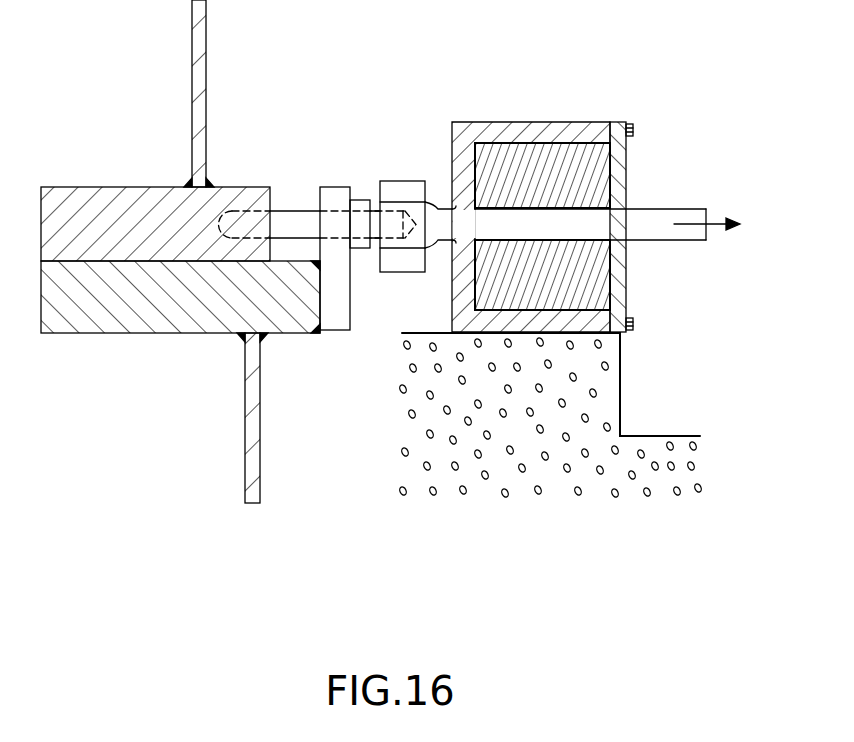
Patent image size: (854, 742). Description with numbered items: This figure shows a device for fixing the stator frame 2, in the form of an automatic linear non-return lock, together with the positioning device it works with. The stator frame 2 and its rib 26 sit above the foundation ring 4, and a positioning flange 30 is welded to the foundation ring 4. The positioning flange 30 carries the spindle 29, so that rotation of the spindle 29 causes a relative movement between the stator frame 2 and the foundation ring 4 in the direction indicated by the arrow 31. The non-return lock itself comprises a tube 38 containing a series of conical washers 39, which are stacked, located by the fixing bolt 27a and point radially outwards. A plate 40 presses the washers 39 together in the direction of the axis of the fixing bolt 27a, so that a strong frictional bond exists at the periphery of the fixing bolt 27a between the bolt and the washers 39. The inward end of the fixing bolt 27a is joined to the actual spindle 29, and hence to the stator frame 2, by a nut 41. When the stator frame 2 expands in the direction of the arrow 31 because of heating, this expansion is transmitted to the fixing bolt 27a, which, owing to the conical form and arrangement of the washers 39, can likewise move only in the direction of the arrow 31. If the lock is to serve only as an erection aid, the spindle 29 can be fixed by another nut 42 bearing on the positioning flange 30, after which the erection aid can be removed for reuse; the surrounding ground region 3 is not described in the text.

The stator frame 2 is at (236, 200).
The ground / granular medium 3 is at (530, 440).
The foundation ring 4 is at (177, 308).
The rib of the stator frame 26 is at (200, 52).
The fixing bolt 27a is at (645, 222).
The spindle 29 is at (289, 228).
The positioning flange 30 is at (336, 315).
The arrow 31 is at (720, 228).
The tube 38 is at (513, 133).
The conical washers 39 is at (570, 185).
The plate 40 is at (613, 170).
The nut 41 is at (393, 193).
The nut 42 is at (358, 222).